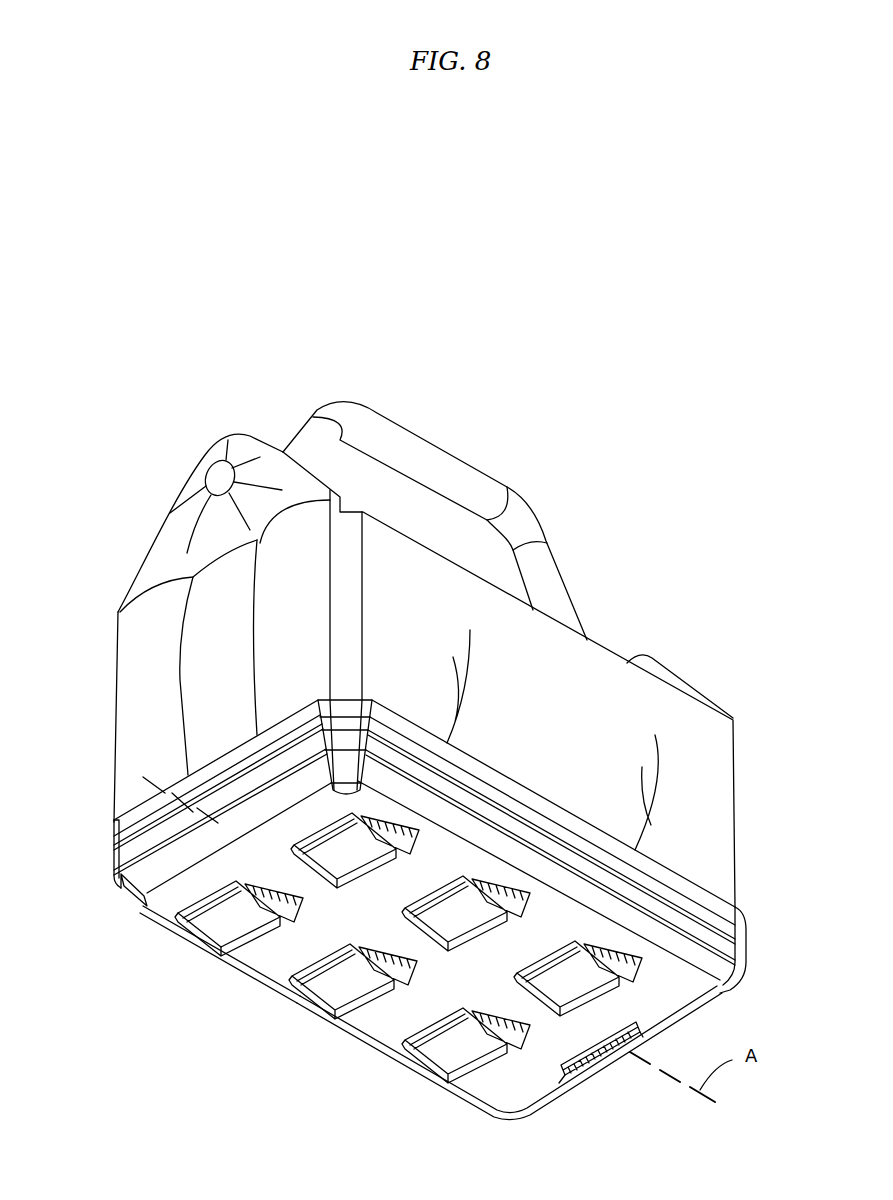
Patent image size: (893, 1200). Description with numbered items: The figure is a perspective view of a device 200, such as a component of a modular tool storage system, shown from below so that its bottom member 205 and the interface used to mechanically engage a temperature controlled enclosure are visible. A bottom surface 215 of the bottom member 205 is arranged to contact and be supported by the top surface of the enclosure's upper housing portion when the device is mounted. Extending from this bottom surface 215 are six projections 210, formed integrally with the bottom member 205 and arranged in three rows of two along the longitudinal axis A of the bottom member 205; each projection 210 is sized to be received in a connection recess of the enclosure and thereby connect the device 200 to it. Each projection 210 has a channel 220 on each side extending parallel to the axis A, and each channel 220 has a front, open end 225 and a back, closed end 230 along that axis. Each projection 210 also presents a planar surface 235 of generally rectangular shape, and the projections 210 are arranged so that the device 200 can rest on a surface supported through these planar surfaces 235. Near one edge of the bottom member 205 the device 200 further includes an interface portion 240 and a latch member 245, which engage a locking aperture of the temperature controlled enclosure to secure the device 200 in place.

The device 200 is at (672, 273).
The bottom member 205 is at (110, 838).
The projection 210 is at (176, 927).
The bottom surface 215 is at (370, 1022).
The channel 220 is at (272, 893).
The front, open end 225 is at (143, 906).
The back, closed end 230 is at (305, 888).
The planar surface 235 is at (224, 932).
The interface portion 240 is at (610, 1060).
The latch member 245 is at (567, 1078).